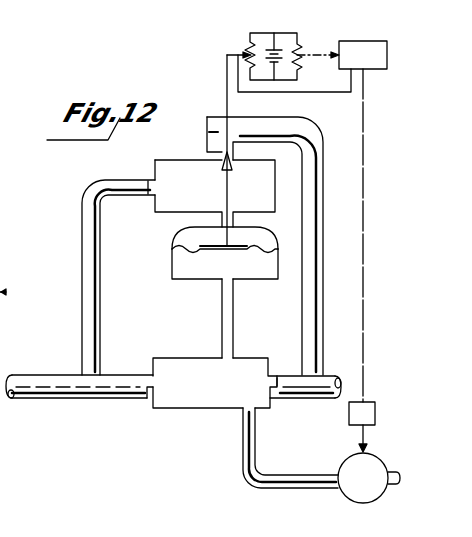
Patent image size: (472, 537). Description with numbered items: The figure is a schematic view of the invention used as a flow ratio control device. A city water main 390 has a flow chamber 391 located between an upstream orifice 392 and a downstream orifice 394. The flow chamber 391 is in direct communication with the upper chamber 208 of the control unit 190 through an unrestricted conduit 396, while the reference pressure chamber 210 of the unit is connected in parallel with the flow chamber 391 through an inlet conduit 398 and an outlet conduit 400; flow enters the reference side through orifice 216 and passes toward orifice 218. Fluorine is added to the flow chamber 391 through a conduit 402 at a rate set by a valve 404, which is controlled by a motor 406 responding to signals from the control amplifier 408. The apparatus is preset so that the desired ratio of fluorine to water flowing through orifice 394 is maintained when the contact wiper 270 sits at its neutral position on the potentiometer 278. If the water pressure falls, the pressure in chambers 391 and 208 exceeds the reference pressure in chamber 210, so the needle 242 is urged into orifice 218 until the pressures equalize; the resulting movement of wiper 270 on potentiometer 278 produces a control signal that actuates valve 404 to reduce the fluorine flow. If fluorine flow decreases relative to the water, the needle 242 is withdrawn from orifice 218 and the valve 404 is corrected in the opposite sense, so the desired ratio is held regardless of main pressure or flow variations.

The unit 190 is at (174, 233).
The upper chamber 208 is at (176, 268).
The lower chamber 210 is at (176, 246).
The orifice 216 is at (150, 181).
The orifice 218 is at (218, 153).
The needle 242 is at (230, 178).
The wiper contact 270 is at (246, 52).
The potentiometer 278 is at (255, 37).
The city water main 390 is at (97, 400).
The flow chamber 391 is at (190, 364).
The upstream orifice 392 is at (153, 392).
The downstream orifice 394 is at (278, 383).
The unrestricted conduit 396 is at (222, 316).
The inlet conduit 398 is at (102, 312).
The outlet conduit 400 is at (324, 297).
The conduit 402 is at (290, 490).
The valve 404 is at (365, 503).
The motor 406 is at (373, 402).
The control amplifier 408 is at (362, 41).